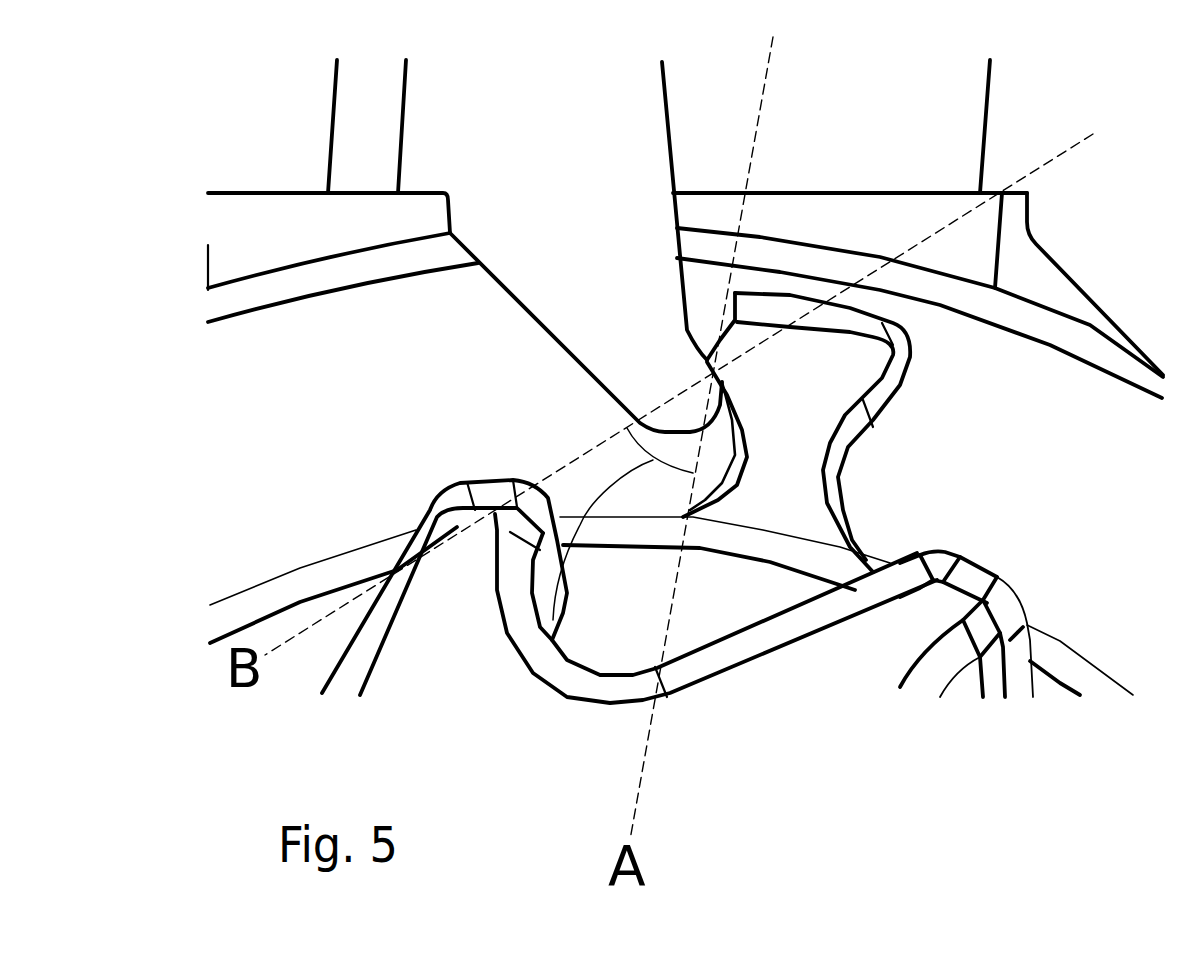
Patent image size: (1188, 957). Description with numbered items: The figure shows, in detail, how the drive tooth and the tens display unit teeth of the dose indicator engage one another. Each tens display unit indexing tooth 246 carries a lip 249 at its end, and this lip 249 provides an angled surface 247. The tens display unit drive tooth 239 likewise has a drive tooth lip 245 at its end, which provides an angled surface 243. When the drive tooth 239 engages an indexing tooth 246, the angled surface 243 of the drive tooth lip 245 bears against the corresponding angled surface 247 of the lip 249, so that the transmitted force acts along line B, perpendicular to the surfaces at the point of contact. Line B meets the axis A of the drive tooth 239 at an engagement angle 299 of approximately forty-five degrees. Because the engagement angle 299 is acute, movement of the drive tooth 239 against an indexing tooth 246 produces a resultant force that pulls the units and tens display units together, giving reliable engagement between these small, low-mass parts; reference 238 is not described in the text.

The strap 238 is at (872, 640).
The tens display unit drive tooth 239 is at (798, 433).
The angled surface 243 is at (710, 360).
The drive tooth lip 245 is at (713, 337).
The tens display unit indexing tooth 246 is at (558, 173).
The angled surface 247 is at (713, 417).
The lip 249 is at (725, 420).
The engagement angle 299 is at (553, 643).